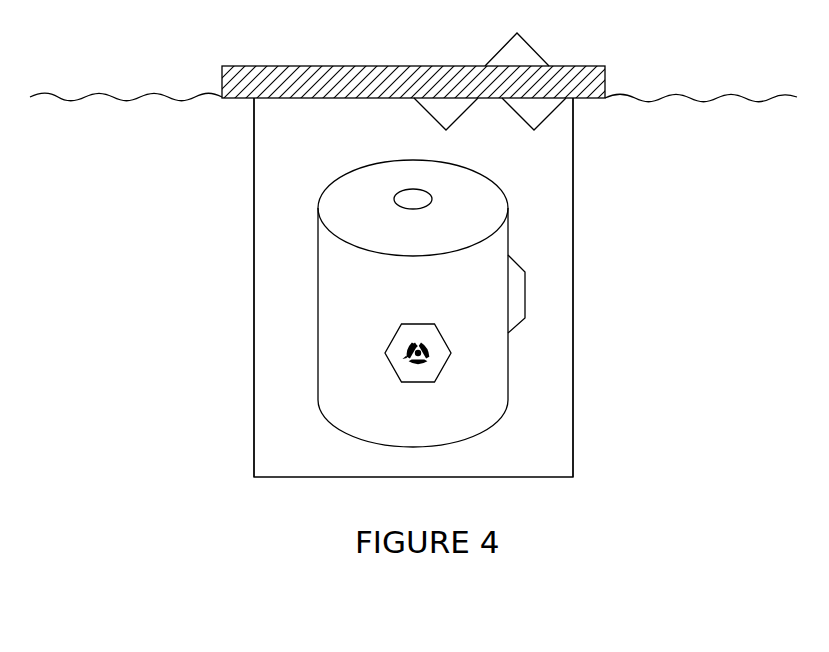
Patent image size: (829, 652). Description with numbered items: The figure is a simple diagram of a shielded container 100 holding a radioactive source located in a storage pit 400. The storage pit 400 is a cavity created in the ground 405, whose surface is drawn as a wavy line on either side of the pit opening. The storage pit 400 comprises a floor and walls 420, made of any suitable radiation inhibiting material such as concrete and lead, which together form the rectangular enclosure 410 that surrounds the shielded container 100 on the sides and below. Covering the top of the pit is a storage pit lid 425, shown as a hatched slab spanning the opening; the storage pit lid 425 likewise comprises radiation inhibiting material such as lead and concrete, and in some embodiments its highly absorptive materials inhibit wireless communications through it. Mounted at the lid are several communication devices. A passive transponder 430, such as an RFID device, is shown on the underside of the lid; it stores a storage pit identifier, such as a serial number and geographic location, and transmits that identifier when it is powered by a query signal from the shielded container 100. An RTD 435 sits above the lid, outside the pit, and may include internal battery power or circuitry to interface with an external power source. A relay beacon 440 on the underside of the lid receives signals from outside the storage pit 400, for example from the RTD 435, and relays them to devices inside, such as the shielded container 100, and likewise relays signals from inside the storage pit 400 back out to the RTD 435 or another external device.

The storage pit 400 is at (640, 45).
The ground 405 is at (143, 139).
The underground container / vault 410 is at (536, 482).
The floor and walls 420 is at (250, 309).
The storage pit lid 425 is at (285, 74).
The passive transponder 430 is at (438, 107).
The RTD 435 is at (508, 52).
The relay beacon 440 is at (533, 115).
The shielded container 100 is at (431, 289).